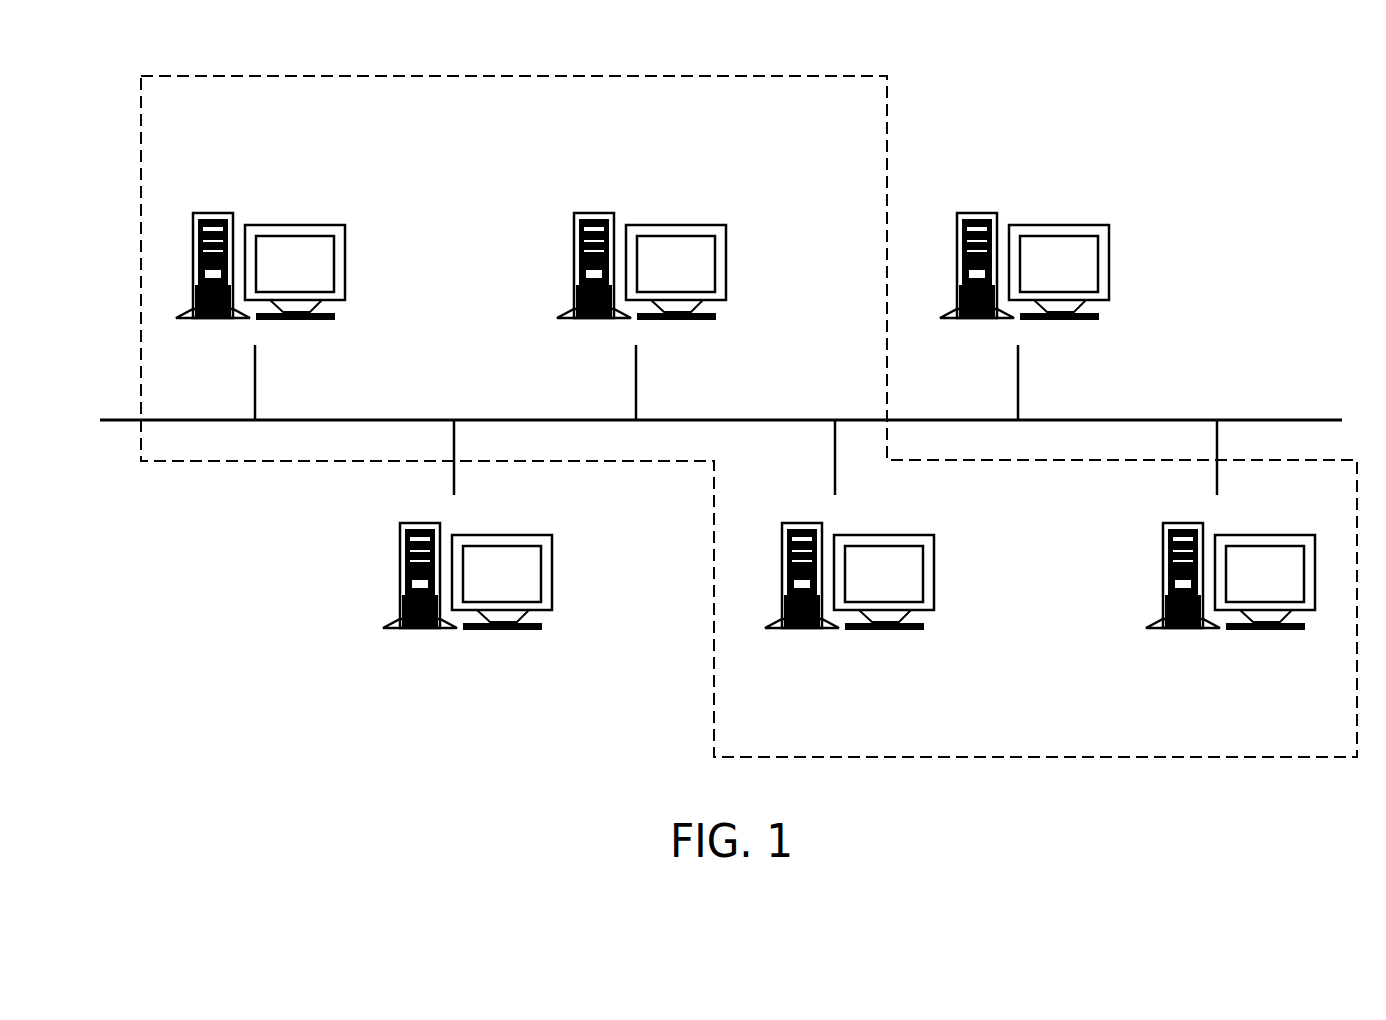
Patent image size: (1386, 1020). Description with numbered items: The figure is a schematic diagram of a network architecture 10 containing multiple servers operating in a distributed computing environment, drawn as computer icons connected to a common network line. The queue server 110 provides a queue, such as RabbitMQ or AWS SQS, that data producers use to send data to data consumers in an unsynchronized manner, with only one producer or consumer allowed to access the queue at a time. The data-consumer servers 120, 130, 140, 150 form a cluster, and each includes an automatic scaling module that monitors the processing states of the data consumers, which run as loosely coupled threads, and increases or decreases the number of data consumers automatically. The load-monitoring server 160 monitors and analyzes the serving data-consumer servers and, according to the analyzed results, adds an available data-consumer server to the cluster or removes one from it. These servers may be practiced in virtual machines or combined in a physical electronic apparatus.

The network system 10 is at (1199, 122).
The queue server 110 is at (464, 653).
The data-consumer server 120 is at (845, 653).
The data-consumer server 130 is at (1228, 653).
The data-consumer server 140 is at (246, 197).
The data-consumer server 150 is at (630, 196).
The load-monitoring server 160 is at (1010, 196).